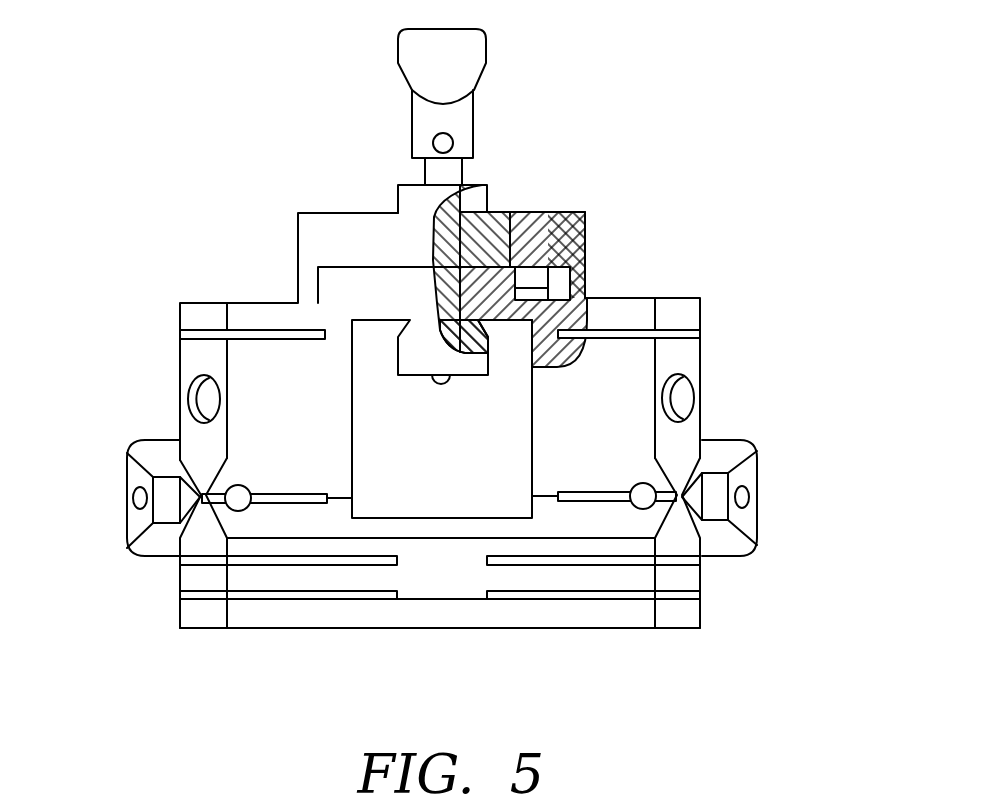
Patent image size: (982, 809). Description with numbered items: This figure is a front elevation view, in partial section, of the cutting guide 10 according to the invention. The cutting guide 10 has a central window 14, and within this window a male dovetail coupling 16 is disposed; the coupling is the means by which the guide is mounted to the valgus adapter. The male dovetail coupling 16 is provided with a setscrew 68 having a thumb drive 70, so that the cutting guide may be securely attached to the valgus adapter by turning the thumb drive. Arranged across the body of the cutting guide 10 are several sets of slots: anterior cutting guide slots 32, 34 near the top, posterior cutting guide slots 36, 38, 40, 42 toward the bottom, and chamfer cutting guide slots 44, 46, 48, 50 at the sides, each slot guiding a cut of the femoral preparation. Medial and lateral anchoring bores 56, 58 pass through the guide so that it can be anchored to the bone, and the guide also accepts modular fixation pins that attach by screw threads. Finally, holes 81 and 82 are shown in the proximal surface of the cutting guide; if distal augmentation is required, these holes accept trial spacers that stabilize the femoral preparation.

The cutting guide 10 is at (214, 662).
The central window 14 is at (532, 412).
The male dovetail coupling 16 is at (437, 372).
The anterior cutting guide slot 32 is at (600, 328).
The anterior cutting guide slot 34 is at (195, 333).
The posterior cutting guide slot 36 is at (317, 602).
The posterior cutting guide slot 38 is at (647, 598).
The posterior cutting guide slot 40 is at (363, 557).
The posterior cutting guide slot 42 is at (597, 555).
The chamfer cutting guide slot 44 is at (157, 453).
The chamfer cutting guide slot 46 is at (725, 452).
The chamfer cutting guide slot 48 is at (153, 548).
The chamfer cutting guide slot 50 is at (717, 533).
The medial anchoring bore 56 is at (133, 498).
The lateral anchoring bore 58 is at (750, 494).
The setscrew 68 is at (482, 187).
The thumb drive 70 is at (463, 53).
The hole 81 is at (245, 512).
The hole 82 is at (645, 510).